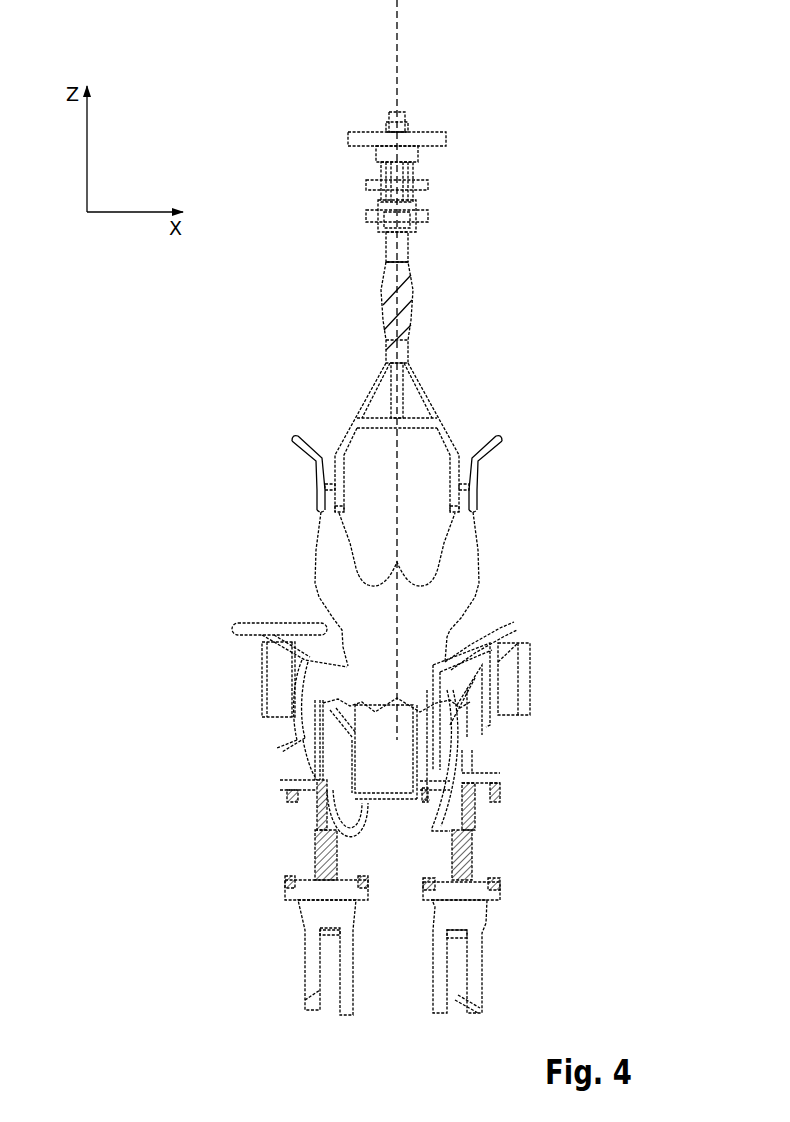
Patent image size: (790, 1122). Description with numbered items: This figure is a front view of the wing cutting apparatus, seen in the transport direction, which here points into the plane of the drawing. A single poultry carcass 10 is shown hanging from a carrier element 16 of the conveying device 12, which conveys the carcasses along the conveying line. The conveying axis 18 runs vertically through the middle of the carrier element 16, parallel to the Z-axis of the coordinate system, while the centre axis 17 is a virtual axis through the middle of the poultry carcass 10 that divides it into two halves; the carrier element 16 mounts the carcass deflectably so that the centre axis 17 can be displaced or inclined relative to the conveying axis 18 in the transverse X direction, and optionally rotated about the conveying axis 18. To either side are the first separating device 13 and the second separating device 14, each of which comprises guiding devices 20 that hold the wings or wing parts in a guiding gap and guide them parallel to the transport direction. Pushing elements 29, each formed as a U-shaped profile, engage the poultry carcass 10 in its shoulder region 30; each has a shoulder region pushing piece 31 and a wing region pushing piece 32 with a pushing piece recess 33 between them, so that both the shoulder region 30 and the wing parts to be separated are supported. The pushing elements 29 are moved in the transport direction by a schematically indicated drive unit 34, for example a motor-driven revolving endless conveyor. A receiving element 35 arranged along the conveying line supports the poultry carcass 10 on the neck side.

The poultry carcass 10 is at (237, 515).
The conveying device 12 is at (462, 165).
The first separating device 13 is at (578, 648).
The second separating device 14 is at (212, 666).
The carrier element 16 is at (460, 385).
The centre axis 17 is at (397, 517).
The conveying axis 18 is at (400, 16).
The guiding device 20 is at (235, 630).
The pushing element 29 is at (280, 757).
The shoulder region 30 is at (464, 642).
The shoulder region pushing piece 31 is at (440, 727).
The wing region pushing piece 32 is at (473, 693).
The pushing piece recess 33 is at (324, 1005).
The drive unit 34 is at (266, 851).
The receiving element 35 is at (377, 767).